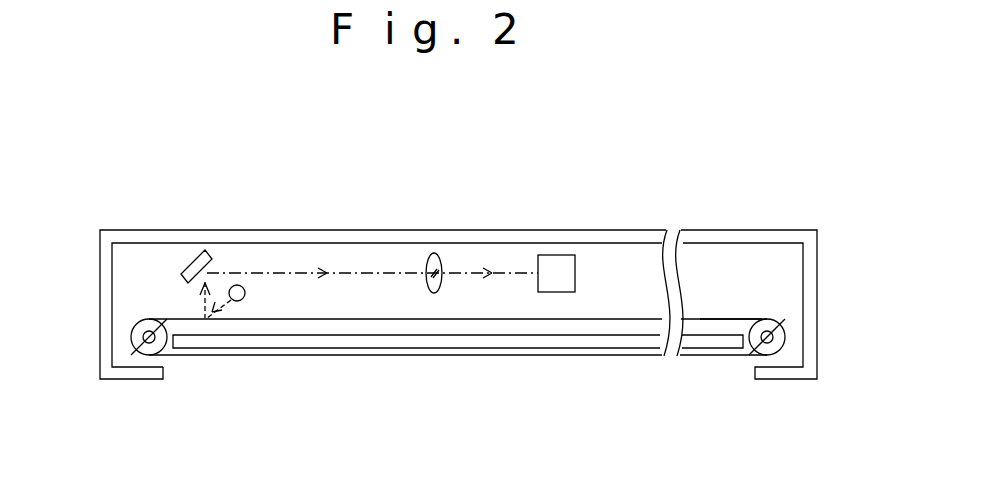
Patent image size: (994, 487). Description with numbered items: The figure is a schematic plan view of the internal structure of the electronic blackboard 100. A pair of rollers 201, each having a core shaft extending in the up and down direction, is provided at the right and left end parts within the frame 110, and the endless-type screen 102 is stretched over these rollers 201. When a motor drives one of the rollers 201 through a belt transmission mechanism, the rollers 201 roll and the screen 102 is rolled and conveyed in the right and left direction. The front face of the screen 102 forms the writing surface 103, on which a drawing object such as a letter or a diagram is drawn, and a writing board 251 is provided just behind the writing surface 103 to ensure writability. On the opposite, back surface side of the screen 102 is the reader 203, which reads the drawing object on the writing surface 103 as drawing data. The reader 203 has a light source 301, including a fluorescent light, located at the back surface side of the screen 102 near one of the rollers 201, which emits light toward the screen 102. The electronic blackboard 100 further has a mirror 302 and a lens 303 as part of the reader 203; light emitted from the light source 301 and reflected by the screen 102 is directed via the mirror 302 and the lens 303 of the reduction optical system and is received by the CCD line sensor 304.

The electronic blackboard 100 is at (722, 192).
The screen 102 is at (731, 317).
The writing surface 103 is at (634, 355).
The frame 110 is at (817, 292).
The rollers 201 is at (137, 328).
The reader 203 is at (378, 262).
The writing board 251 is at (551, 345).
The light source 301 is at (245, 286).
The mirror 302 is at (197, 251).
The lens 303 is at (440, 256).
The CCD line sensor 304 is at (563, 255).